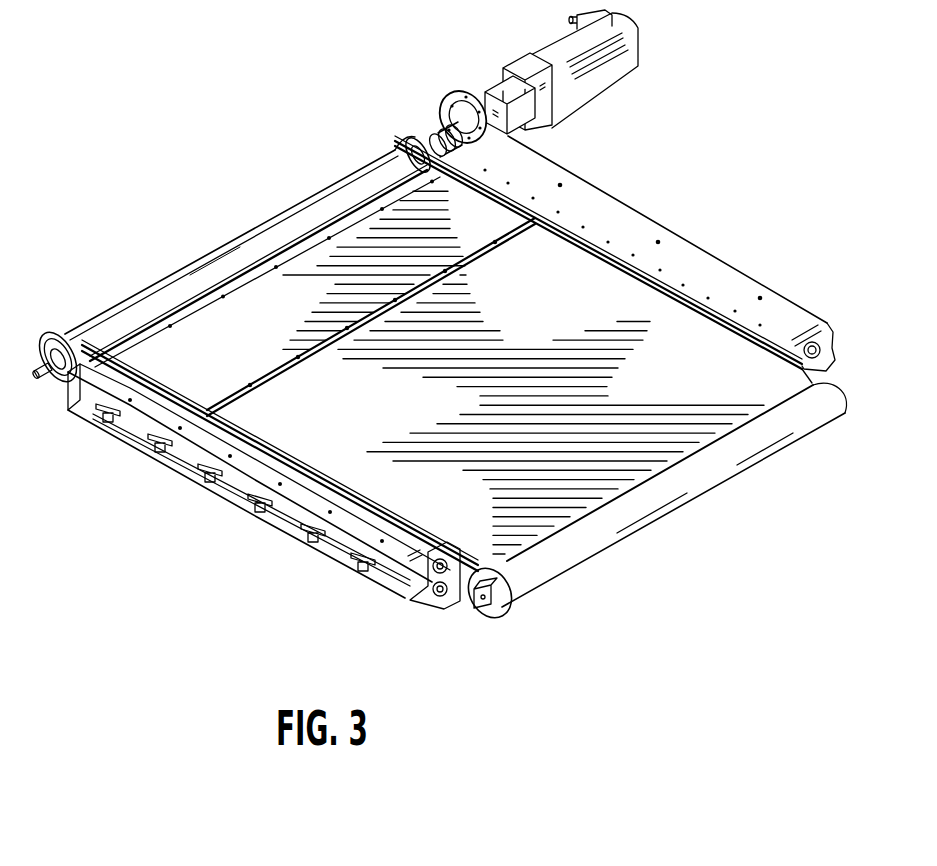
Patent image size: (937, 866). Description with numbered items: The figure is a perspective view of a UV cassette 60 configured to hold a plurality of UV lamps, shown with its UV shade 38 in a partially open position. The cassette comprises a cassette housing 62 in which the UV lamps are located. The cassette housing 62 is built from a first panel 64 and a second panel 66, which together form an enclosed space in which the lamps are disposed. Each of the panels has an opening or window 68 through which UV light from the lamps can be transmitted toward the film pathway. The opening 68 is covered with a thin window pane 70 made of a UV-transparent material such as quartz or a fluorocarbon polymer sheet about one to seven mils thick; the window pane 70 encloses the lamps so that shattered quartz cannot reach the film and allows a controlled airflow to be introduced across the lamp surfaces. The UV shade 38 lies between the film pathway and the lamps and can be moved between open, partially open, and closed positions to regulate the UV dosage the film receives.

The UV shade 38 is at (717, 346).
The UV cassette 60 is at (547, 173).
The cassette housing 62 is at (634, 236).
The first panel 64 is at (223, 300).
The second panel 66 is at (83, 438).
The opening or window 68 is at (390, 236).
The window pane 70 is at (226, 366).